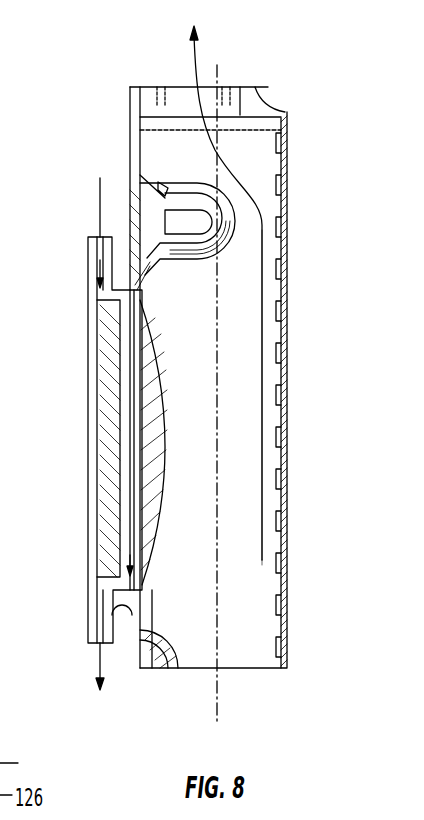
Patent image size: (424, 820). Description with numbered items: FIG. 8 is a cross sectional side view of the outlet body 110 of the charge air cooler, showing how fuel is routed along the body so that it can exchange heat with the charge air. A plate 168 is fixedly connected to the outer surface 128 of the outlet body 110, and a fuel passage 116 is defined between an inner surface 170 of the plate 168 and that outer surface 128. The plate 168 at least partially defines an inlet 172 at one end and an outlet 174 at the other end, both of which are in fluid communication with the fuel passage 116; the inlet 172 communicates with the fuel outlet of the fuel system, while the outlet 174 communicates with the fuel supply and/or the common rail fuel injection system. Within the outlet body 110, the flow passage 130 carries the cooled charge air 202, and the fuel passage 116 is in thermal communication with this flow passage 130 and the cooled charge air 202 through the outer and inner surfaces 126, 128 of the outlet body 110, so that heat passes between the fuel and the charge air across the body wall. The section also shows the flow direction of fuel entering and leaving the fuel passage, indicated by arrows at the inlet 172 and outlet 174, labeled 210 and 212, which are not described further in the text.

The outlet body 110 is at (325, 123).
The fuel passage 116 is at (137, 388).
The outer surface 126 is at (150, 640).
The outer surface 128 is at (126, 198).
The flow passage 130 is at (263, 619).
The plate 168 is at (100, 440).
The inner surface 170 is at (132, 350).
The inlet 172 is at (90, 232).
The outlet 174 is at (92, 640).
The cooled charge air 202 is at (264, 302).
The upper rod 210 is at (100, 192).
The lower rod 212 is at (87, 685).